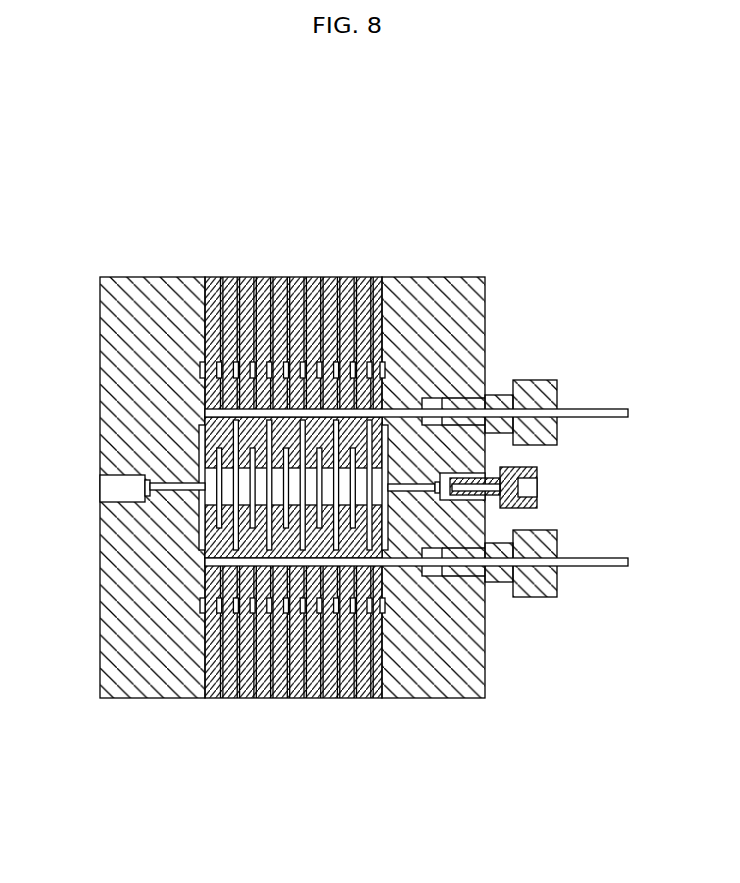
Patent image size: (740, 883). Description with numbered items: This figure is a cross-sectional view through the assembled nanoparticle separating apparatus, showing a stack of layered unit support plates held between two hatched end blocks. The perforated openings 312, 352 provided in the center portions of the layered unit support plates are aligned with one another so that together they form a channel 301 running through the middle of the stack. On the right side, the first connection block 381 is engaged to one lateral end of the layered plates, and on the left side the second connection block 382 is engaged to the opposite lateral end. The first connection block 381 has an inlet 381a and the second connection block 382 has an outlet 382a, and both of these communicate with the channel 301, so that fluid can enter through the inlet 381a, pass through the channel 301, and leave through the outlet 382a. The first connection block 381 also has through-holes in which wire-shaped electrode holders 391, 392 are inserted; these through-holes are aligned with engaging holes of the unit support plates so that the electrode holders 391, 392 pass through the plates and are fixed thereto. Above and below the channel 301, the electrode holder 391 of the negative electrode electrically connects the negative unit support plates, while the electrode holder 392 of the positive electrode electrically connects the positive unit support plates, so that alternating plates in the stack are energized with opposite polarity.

The channel 301 is at (239, 464).
The perforated opening 312 is at (388, 478).
The perforated opening 352 is at (352, 478).
The first connection block 381 is at (462, 698).
The inlet 381a is at (420, 490).
The second connection block 382 is at (157, 698).
The outlet 382a is at (165, 492).
The electrode holder 391 is at (597, 410).
The electrode holder 392 is at (624, 568).